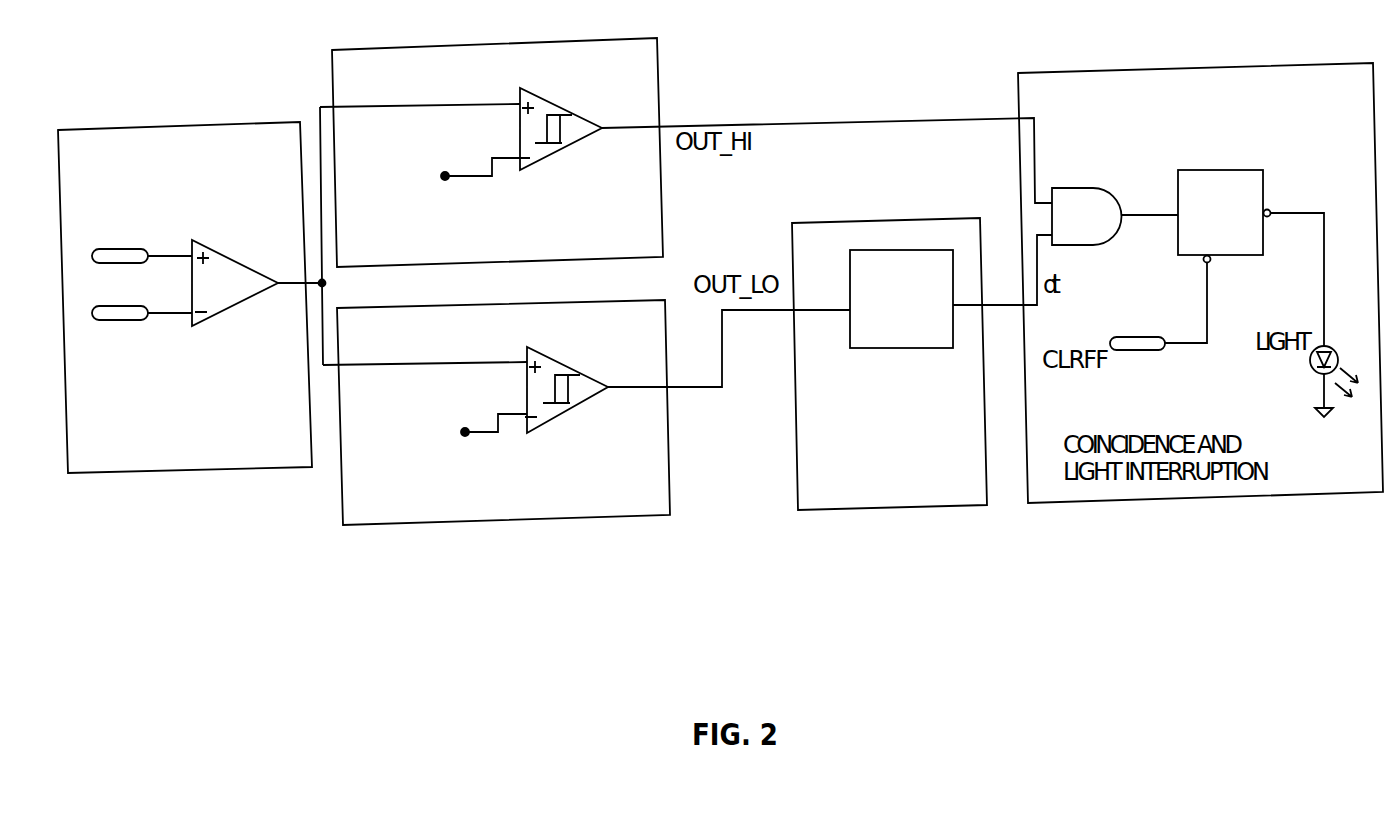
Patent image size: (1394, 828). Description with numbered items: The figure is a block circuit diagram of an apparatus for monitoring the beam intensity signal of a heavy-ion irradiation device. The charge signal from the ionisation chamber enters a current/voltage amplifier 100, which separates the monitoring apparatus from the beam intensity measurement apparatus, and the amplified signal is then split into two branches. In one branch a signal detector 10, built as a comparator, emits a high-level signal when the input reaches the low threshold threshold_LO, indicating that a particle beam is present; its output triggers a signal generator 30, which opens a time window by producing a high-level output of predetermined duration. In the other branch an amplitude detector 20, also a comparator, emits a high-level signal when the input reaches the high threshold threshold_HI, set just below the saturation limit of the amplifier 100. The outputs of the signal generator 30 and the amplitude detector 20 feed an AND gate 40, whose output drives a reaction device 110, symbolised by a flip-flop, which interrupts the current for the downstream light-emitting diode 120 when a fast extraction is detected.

The current/voltage amplifier 100 is at (200, 122).
The amplitude detector 20 is at (660, 92).
The signal detector 10 is at (602, 517).
The signal generator 30 is at (858, 508).
The AND gate 40 is at (1107, 187).
The reaction device 110 is at (1305, 153).
The light-emitting diode 120 is at (1312, 368).